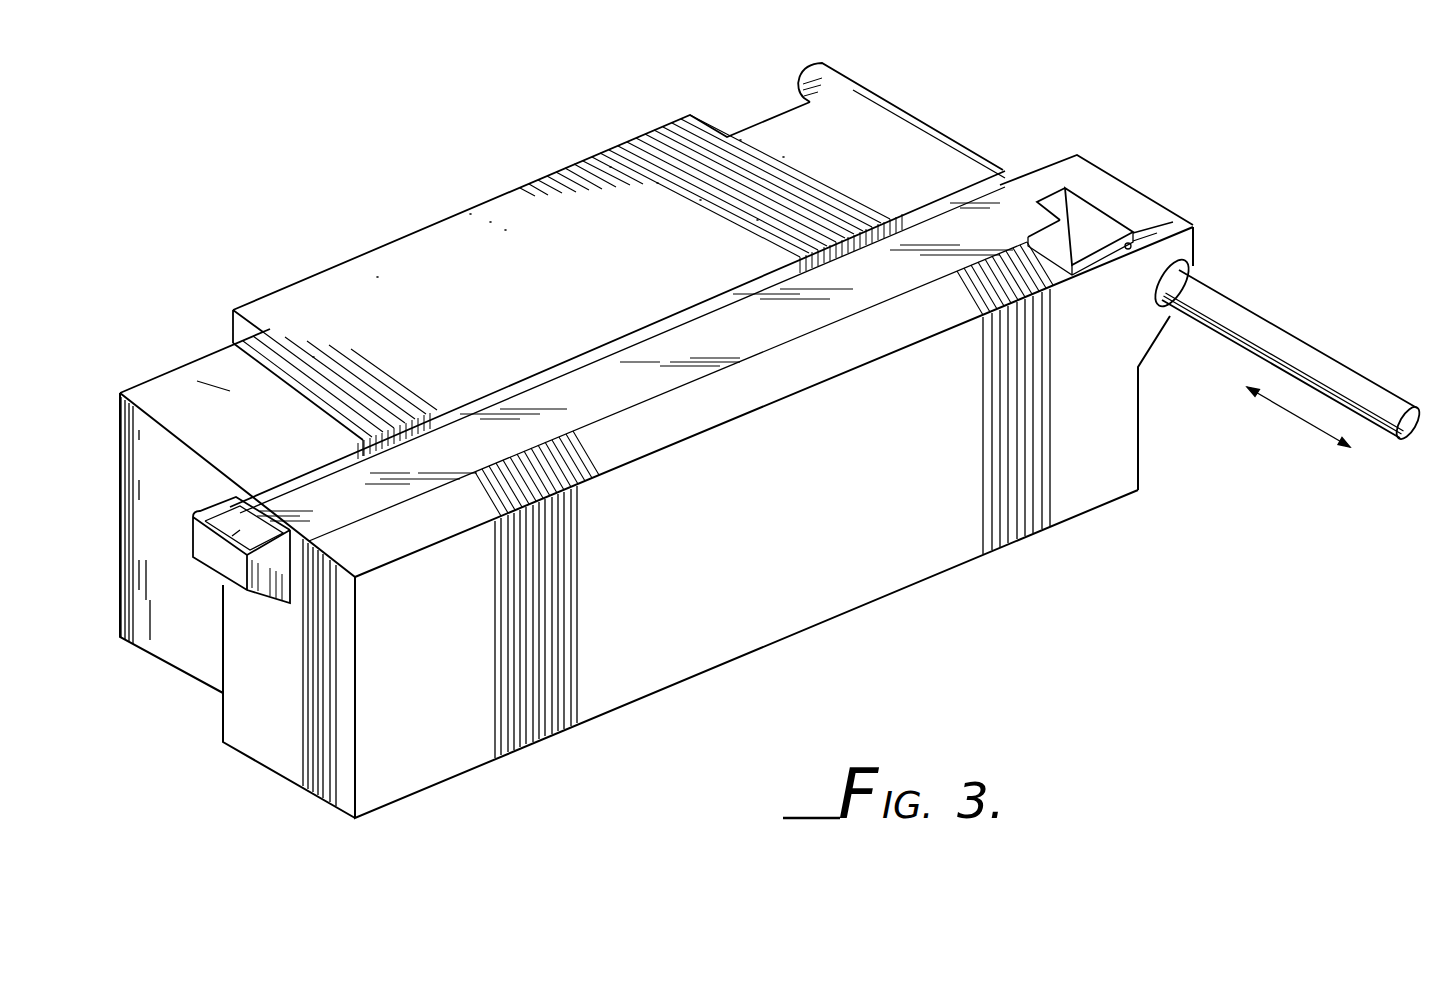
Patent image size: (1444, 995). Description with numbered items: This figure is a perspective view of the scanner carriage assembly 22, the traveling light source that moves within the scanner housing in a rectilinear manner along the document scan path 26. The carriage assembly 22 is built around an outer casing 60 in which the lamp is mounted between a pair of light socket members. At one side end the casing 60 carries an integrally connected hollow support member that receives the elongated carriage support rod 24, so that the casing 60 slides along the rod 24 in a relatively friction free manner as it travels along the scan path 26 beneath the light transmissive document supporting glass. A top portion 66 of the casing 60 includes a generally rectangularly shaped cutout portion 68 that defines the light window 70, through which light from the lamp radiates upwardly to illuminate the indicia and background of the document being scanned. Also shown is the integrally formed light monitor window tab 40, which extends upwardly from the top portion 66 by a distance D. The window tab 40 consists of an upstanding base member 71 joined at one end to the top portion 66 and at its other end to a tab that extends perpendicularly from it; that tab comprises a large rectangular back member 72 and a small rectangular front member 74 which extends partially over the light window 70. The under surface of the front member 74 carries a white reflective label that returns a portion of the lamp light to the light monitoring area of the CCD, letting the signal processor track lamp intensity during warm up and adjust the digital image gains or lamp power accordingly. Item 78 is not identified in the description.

The carriage assembly 22 is at (772, 483).
The carriage support rod 24 is at (1300, 348).
The document scan path 26 is at (1300, 420).
The light monitor window tab 40 is at (1091, 227).
The outer casing 60 is at (880, 580).
The top portion 66 is at (1079, 158).
The cutout portion 68 is at (613, 415).
The light window 70 is at (557, 400).
The upstanding base member 71 is at (1142, 250).
The back member 72 is at (1123, 226).
The front member 74 is at (1055, 195).
The end latch tab 78 is at (228, 505).